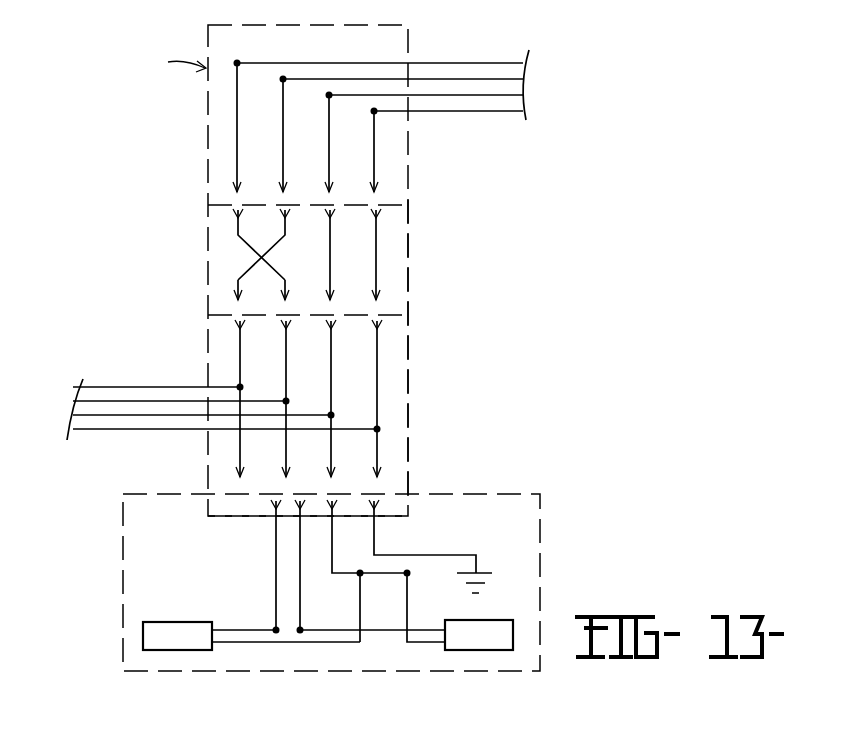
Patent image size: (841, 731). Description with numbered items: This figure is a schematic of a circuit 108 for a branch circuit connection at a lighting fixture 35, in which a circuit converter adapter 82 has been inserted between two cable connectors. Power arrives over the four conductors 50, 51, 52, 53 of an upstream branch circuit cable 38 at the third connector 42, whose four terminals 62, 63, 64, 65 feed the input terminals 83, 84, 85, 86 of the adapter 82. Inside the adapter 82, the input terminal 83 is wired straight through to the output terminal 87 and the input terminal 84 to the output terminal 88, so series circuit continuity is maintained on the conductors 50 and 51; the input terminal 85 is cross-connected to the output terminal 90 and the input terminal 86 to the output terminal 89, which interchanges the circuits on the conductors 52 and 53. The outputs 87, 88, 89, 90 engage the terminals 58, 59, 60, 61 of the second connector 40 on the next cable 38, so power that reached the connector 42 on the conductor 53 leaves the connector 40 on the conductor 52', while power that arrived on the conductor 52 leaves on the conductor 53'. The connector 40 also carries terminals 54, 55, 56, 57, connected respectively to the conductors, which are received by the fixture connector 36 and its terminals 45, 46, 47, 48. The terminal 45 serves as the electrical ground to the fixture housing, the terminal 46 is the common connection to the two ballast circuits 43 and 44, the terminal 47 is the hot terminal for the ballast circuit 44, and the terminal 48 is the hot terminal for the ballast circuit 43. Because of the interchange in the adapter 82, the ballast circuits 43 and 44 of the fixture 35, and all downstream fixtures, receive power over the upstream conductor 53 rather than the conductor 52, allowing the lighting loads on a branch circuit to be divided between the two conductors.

The circuit 108 is at (162, 68).
The third connector 42 is at (352, 22).
The branch circuit cable 38 is at (306, 248).
The conductor 53 is at (380, 43).
The conductor 52 is at (403, 54).
The conductor 51 is at (432, 97).
The conductor 50 is at (473, 113).
The conductor 53' is at (156, 356).
The conductor 52' is at (179, 376).
The terminal 65 is at (268, 176).
The terminal 64 is at (316, 175).
The terminal 63 is at (360, 173).
The terminal 62 is at (380, 189).
The input terminal 83 is at (380, 213).
The circuit converter adapter 82 is at (210, 243).
The input terminal 86 is at (259, 244).
The input terminal 85 is at (284, 244).
The input terminal 84 is at (350, 254).
The output terminal 89 is at (322, 282).
The output terminal 88 is at (362, 290).
The output terminal 87 is at (380, 297).
The output terminal 90 is at (234, 297).
The terminal 58 is at (382, 323).
The terminal 61 is at (262, 398).
The terminal 60 is at (307, 398).
The terminal 59 is at (352, 398).
The second connector 40 is at (411, 370).
The terminal 57 is at (275, 466).
The terminal 56 is at (320, 464).
The terminal 55 is at (365, 466).
The terminal 54 is at (381, 476).
The lighting fixture 35 is at (510, 492).
The fixture connector 36 is at (205, 516).
The terminal 48 is at (273, 510).
The terminal 47 is at (303, 506).
The terminal 46 is at (334, 508).
The terminal 45 is at (380, 503).
The ballast circuit 43 is at (192, 620).
The ballast circuit 44 is at (480, 620).